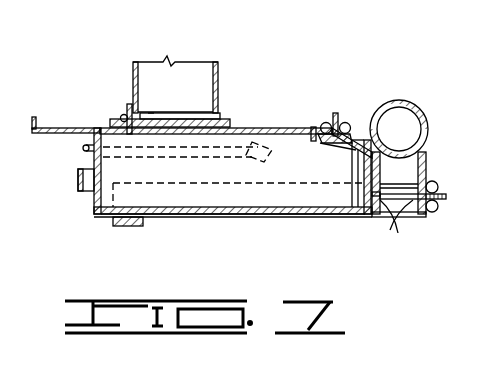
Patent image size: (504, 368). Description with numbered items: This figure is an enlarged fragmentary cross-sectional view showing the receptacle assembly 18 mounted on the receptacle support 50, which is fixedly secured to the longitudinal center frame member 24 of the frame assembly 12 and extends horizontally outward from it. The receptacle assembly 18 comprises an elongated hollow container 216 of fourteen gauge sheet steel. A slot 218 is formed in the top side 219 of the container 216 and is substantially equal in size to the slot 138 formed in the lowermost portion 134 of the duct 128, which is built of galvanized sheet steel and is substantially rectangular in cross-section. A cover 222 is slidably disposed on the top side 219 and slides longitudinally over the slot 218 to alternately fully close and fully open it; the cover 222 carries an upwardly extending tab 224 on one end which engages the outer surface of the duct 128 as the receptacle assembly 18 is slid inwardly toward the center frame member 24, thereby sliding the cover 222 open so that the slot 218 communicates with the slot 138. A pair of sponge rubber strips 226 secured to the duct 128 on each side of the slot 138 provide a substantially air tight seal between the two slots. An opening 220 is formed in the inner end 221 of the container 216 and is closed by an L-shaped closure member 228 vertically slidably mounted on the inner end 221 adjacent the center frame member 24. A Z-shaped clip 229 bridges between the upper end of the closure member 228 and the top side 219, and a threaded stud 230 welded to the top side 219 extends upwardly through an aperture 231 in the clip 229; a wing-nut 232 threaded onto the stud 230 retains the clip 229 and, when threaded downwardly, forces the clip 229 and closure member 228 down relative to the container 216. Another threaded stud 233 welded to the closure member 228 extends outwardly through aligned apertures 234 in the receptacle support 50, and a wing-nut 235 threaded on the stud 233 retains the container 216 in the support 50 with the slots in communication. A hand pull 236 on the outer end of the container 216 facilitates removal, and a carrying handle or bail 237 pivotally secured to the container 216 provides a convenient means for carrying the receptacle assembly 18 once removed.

The frame assembly 12 is at (440, 135).
The receptacle assembly 18 is at (84, 219).
The longitudinal center frame member 24 is at (427, 119).
The receptacle support 50 is at (356, 217).
The duct 128 is at (218, 71).
The lowermost portion 134 is at (221, 113).
The slot 138 is at (158, 114).
The elongated hollow container 216 is at (94, 196).
The slot 218 is at (153, 137).
The top side 219 is at (253, 128).
The opening 220 is at (370, 195).
The inner end 221 is at (366, 178).
The cover 222 is at (60, 127).
The upwardly extending tab 224 is at (122, 114).
The sponge rubber strips 226 is at (180, 120).
The L-shaped closure member 228 is at (386, 108).
The Z-shaped clip 229 is at (353, 142).
The threaded stud 230 is at (336, 113).
The aperture 231 is at (318, 127).
The wing-nut 232 is at (347, 123).
The threaded stud 233 is at (446, 197).
The aligned apertures 234 is at (412, 227).
The wing-nut 235 is at (440, 185).
The hand pull 236 is at (78, 182).
The carrying handle or bail 237 is at (82, 148).